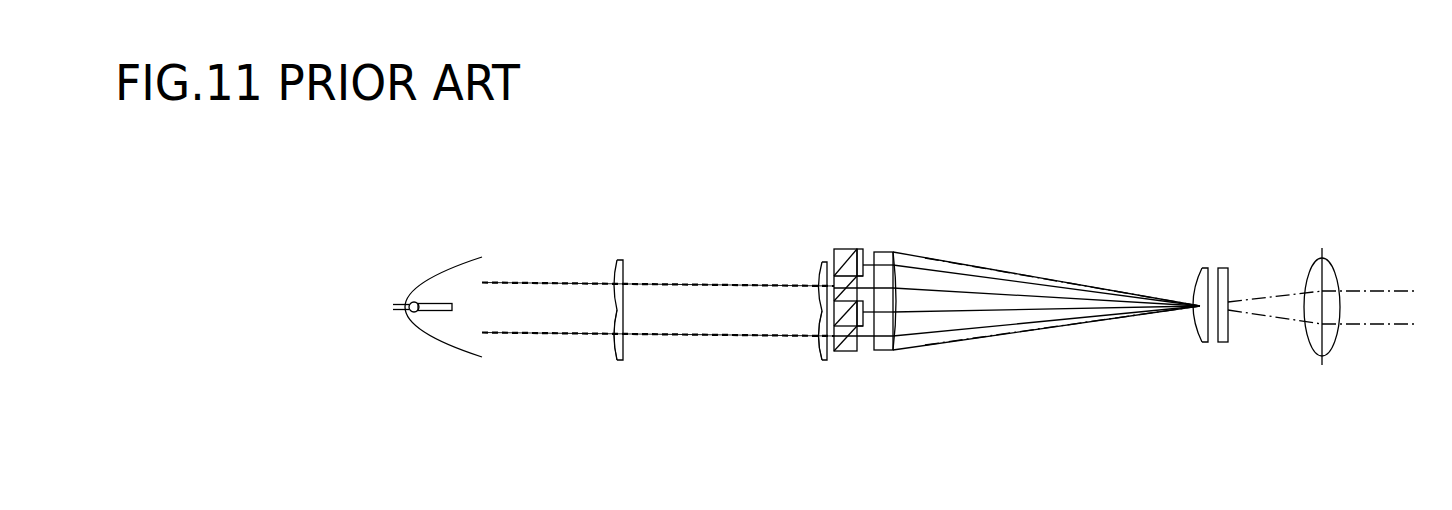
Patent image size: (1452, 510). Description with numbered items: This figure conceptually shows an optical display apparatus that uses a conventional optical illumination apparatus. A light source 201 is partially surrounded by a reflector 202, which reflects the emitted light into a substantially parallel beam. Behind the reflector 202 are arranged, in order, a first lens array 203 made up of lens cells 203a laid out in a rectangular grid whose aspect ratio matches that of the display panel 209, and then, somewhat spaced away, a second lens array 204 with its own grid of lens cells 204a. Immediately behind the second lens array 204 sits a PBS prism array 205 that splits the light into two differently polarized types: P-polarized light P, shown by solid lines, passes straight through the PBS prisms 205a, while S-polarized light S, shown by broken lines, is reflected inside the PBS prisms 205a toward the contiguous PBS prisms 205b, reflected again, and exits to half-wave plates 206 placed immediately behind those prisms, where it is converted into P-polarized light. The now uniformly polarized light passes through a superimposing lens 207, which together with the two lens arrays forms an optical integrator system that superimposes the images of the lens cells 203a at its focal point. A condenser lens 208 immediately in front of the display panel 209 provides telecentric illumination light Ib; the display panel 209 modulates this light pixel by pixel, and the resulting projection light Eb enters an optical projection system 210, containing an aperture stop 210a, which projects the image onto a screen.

The light source 201 is at (410, 300).
The reflector 202 is at (462, 257).
The first lens array 203 is at (634, 261).
The lens cells 203a is at (618, 347).
The second lens array 204 is at (818, 259).
The lens cells 204a is at (822, 352).
The PBS prism array 205 is at (847, 303).
The PBS prisms 205a is at (850, 351).
The PBS prisms 205b is at (842, 249).
The half-wave plates 206 is at (860, 258).
The superimposing lens 207 is at (888, 325).
The condenser lens 208 is at (1200, 282).
The display panel 209 is at (1230, 268).
The optical projection system 210 is at (1364, 304).
The aperture stop 210a is at (1325, 362).
The S-polarized light S is at (723, 283).
The P-polarized light P is at (698, 286).
The illumination light Ib is at (1070, 333).
The projection light Eb is at (1268, 325).